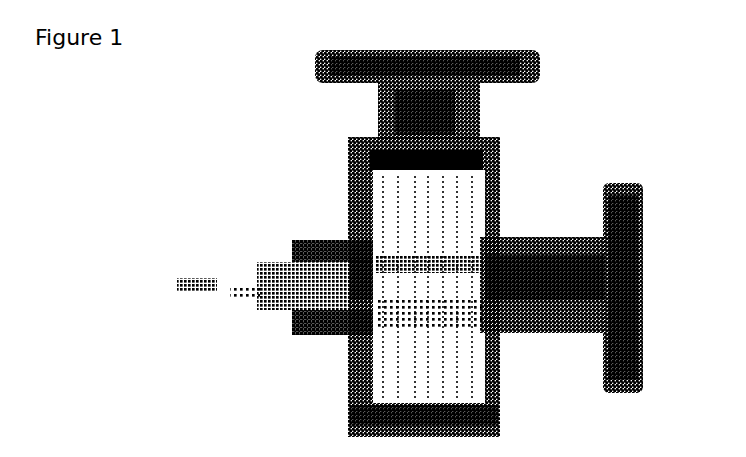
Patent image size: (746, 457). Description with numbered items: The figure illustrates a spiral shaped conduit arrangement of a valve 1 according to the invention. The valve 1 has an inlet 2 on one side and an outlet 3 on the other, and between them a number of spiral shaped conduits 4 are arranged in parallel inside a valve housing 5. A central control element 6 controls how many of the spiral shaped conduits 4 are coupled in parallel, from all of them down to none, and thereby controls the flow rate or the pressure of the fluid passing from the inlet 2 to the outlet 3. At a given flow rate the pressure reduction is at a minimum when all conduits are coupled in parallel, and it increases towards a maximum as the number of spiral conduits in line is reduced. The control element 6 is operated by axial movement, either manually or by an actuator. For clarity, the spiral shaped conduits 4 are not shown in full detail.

The valve 1 is at (290, 202).
The inlet 2 is at (420, 118).
The outlet 3 is at (637, 285).
The spiral shaped conduits 4 is at (460, 230).
The valve housing 5 is at (498, 360).
The central control element 6 is at (343, 292).